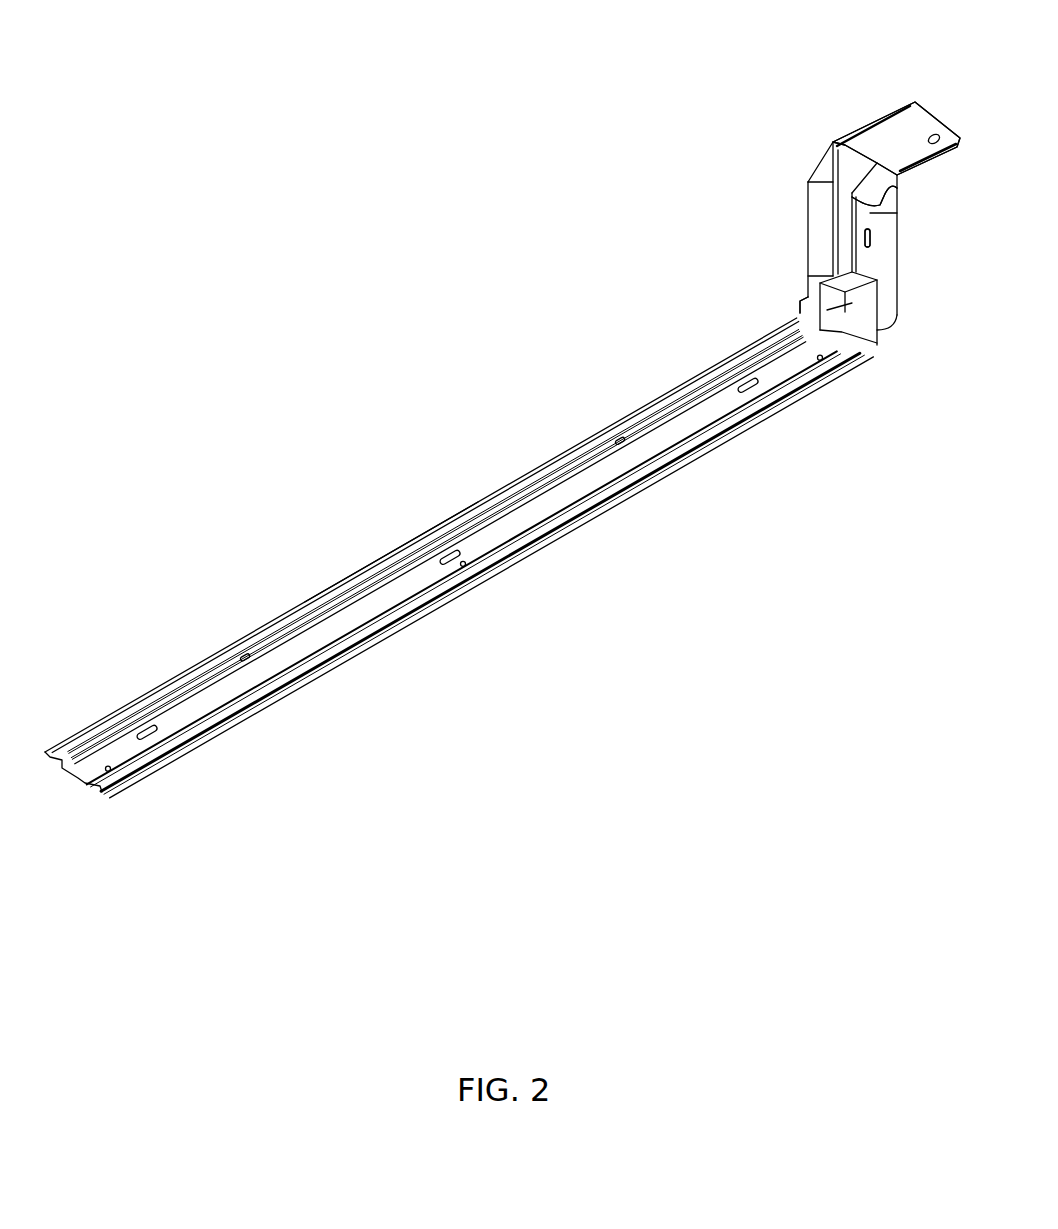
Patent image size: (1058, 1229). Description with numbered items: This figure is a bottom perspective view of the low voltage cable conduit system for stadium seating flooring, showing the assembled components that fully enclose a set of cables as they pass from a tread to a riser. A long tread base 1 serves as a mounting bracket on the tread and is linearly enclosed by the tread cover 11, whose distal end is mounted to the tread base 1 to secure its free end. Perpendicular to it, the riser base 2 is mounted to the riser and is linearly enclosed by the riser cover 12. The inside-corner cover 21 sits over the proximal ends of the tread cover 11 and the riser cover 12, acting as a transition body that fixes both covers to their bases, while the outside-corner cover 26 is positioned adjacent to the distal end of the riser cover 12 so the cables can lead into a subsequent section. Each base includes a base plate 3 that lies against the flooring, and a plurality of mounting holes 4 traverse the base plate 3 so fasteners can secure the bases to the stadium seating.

The tread base 1 is at (123, 762).
The tread cover 11 is at (351, 562).
The riser cover 12 is at (800, 243).
The outside-corner cover 26 is at (902, 92).
The base plate 3 is at (898, 190).
The mounting holes 4 is at (880, 233).
The inside-corner cover 21 is at (798, 299).
The riser base 2 is at (885, 279).